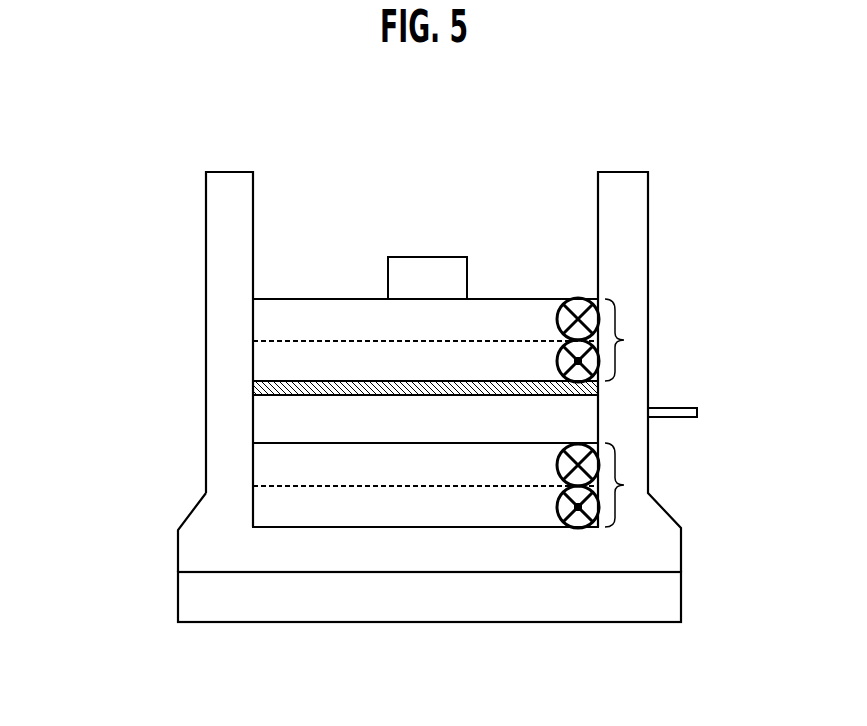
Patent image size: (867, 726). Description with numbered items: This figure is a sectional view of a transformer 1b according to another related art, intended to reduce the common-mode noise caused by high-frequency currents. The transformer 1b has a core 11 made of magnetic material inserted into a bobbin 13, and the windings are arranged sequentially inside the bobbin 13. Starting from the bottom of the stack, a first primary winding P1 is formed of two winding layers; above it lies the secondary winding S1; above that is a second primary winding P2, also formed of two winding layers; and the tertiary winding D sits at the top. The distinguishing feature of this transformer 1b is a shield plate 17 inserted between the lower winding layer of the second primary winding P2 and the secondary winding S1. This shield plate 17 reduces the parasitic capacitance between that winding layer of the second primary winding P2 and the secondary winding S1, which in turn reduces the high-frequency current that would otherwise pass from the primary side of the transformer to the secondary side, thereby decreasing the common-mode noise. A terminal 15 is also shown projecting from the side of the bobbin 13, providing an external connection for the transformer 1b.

The transformer 1b is at (429, 381).
The core 11 is at (290, 608).
The bobbin 13 is at (667, 550).
The terminal 15 is at (686, 408).
The shield plate 17 is at (278, 395).
The first primary winding P1 is at (624, 485).
The second primary winding P2 is at (624, 340).
The secondary winding S1 is at (425, 419).
The tertiary winding D is at (427, 278).